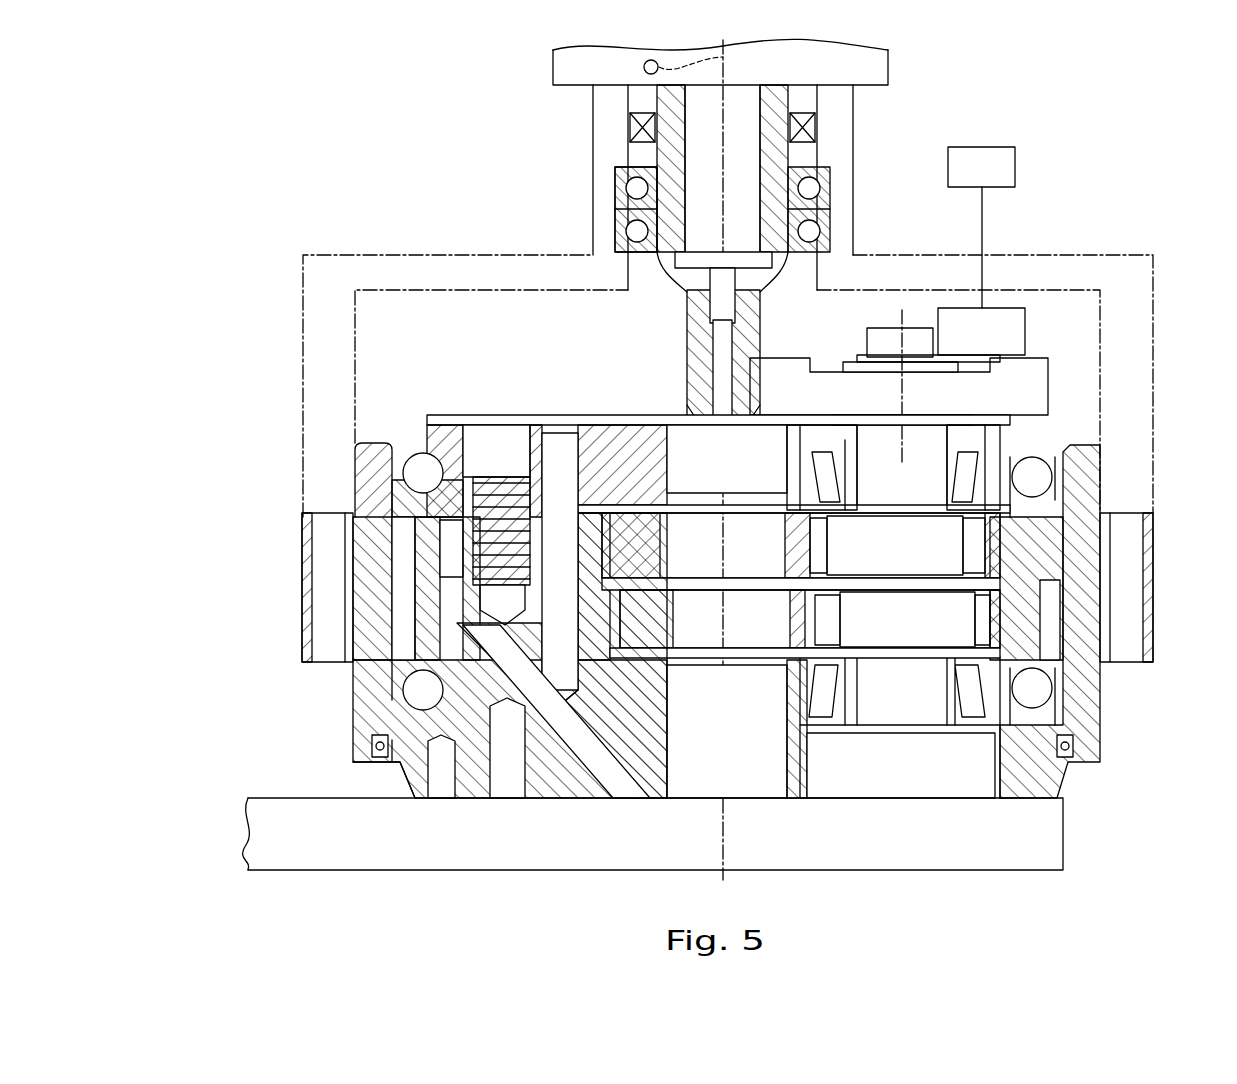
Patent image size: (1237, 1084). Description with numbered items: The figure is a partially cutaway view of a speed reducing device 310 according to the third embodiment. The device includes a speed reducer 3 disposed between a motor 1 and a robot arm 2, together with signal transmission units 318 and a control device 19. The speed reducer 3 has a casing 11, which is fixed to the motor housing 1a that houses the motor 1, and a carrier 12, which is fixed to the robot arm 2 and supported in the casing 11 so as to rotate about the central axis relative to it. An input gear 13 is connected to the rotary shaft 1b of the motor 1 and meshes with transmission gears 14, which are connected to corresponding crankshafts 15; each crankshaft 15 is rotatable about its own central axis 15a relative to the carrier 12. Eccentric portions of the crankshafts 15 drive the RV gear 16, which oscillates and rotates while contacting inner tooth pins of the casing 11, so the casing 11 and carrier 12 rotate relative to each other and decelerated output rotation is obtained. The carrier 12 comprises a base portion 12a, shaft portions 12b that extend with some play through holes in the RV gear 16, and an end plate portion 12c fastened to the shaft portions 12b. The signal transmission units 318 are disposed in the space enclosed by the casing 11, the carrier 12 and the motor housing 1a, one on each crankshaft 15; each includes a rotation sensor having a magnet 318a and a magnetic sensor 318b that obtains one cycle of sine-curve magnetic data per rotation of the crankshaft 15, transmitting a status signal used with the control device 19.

The motor 1 is at (890, 70).
The motor housing 1a is at (303, 400).
The rotary shaft 1b is at (743, 160).
The robot arm 2 is at (1065, 837).
The speed reducer 3 is at (1140, 470).
The casing 11 is at (1100, 490).
The carrier 12 is at (427, 611).
The base portion 12a is at (490, 715).
The shaft portions 12b is at (440, 575).
The end plate portion 12c is at (440, 500).
The input gear 13 is at (757, 348).
The transmission gears 14 is at (1050, 390).
The crankshafts 15 is at (925, 438).
The central axis 15a is at (985, 366).
The RV gear 16 is at (1030, 614).
The control device 19 is at (1016, 167).
The speed reducing device 310 is at (703, 459).
The signal transmission units 318 is at (1032, 284).
The magnet 318a is at (915, 327).
The magnetic sensor 318b is at (1030, 327).